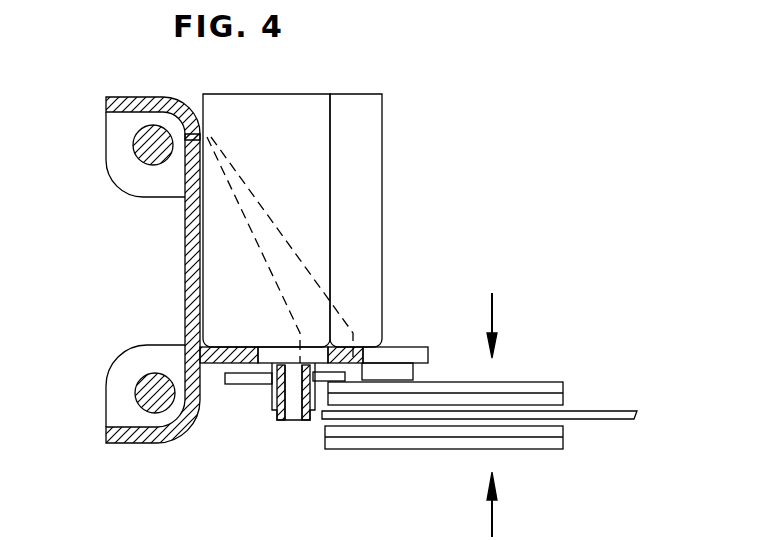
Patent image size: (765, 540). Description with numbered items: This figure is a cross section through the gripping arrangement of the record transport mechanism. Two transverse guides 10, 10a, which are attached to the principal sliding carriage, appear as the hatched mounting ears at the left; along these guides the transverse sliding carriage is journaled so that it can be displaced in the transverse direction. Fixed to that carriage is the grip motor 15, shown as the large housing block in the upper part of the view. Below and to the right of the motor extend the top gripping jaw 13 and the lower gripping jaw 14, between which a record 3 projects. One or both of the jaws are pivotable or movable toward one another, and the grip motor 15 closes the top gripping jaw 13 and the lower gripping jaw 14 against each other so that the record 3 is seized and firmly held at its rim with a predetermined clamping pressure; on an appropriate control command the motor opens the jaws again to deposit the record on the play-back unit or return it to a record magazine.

The transverse guide 10 is at (122, 146).
The transverse guide 10a is at (117, 288).
The grip motor 15 is at (336, 228).
The top gripping jaw 13 is at (490, 377).
The record 3 is at (512, 398).
The lower gripping jaw 14 is at (489, 459).